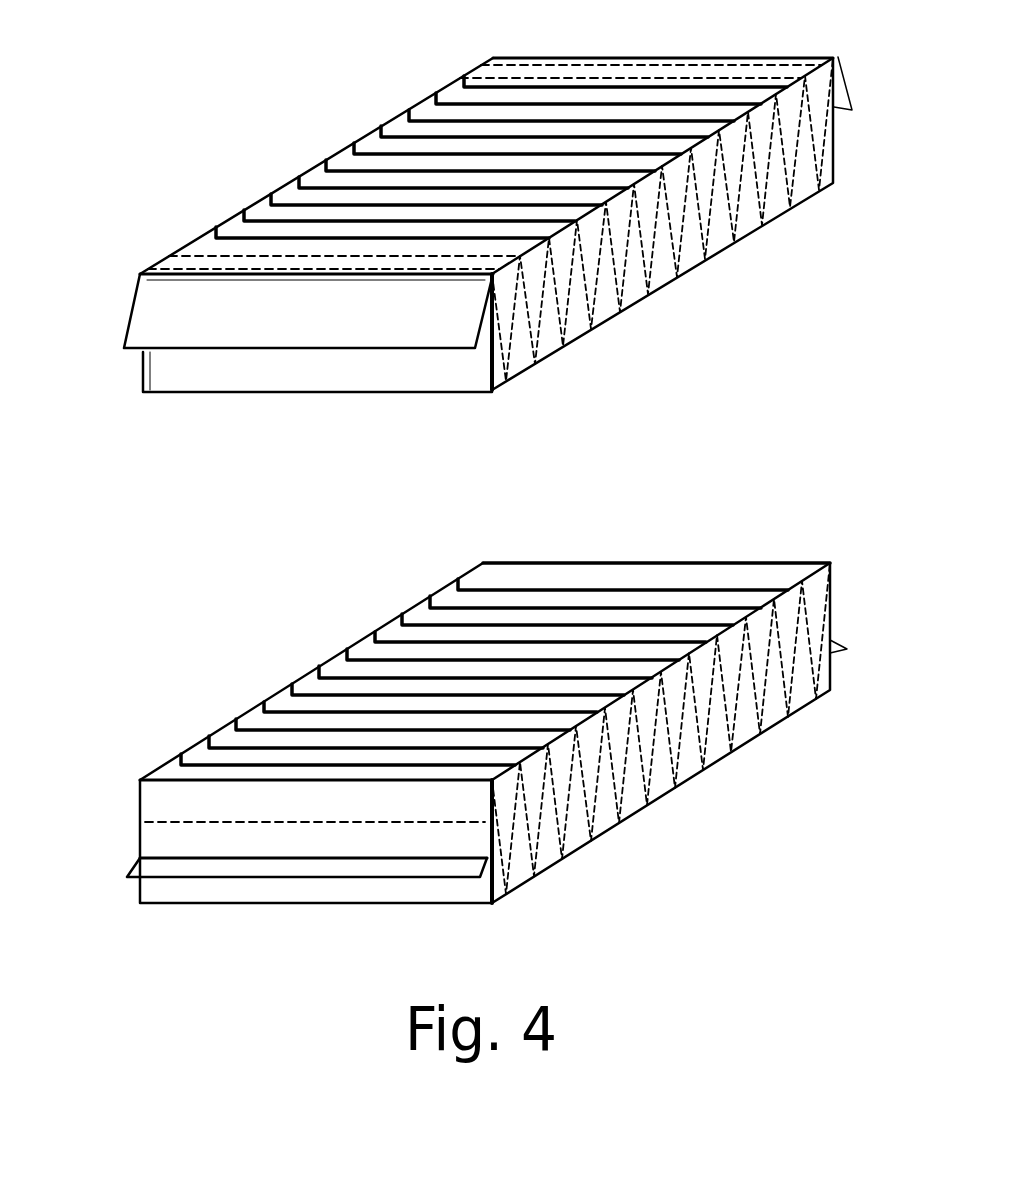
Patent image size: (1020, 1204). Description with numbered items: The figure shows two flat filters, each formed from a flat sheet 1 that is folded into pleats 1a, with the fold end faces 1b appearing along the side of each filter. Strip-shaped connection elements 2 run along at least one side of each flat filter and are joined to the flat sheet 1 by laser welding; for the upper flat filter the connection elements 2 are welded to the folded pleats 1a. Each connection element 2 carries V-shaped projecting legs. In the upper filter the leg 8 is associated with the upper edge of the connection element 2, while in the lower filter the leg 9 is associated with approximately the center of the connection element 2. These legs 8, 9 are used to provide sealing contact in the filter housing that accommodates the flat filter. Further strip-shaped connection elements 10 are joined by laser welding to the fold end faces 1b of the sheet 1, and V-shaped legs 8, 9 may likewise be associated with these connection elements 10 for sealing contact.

The flat sheet 1 is at (300, 196).
The folded pleats 1a is at (187, 247).
The fold end faces 1b is at (677, 237).
The connection element 2 is at (203, 370).
The leg 8 is at (128, 318).
The leg 9 is at (127, 872).
The connection element 10 is at (605, 322).